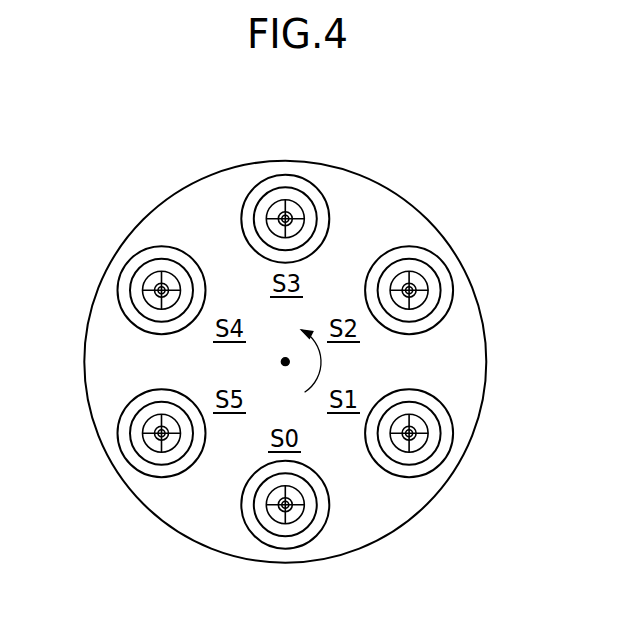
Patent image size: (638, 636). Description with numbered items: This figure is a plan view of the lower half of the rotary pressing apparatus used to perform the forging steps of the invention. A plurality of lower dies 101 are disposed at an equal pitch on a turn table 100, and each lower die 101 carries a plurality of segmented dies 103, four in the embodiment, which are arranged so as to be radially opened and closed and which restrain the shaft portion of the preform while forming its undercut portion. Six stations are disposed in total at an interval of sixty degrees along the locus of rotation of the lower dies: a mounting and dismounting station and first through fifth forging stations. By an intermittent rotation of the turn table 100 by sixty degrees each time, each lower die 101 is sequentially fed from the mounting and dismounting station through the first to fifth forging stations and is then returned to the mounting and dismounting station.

The turn table 100 is at (367, 202).
The lower die 101 is at (250, 186).
The segmented dies 103 is at (275, 211).